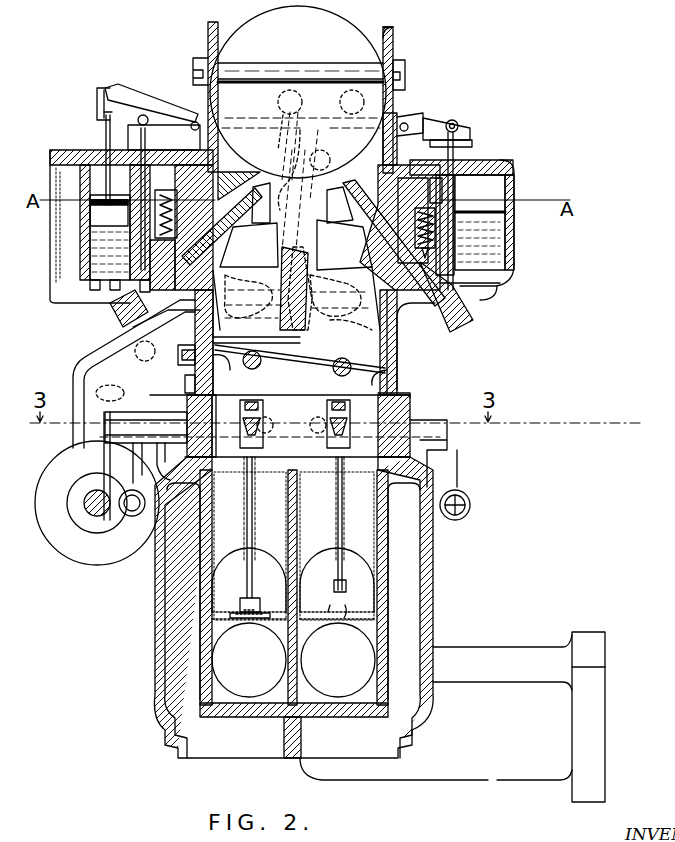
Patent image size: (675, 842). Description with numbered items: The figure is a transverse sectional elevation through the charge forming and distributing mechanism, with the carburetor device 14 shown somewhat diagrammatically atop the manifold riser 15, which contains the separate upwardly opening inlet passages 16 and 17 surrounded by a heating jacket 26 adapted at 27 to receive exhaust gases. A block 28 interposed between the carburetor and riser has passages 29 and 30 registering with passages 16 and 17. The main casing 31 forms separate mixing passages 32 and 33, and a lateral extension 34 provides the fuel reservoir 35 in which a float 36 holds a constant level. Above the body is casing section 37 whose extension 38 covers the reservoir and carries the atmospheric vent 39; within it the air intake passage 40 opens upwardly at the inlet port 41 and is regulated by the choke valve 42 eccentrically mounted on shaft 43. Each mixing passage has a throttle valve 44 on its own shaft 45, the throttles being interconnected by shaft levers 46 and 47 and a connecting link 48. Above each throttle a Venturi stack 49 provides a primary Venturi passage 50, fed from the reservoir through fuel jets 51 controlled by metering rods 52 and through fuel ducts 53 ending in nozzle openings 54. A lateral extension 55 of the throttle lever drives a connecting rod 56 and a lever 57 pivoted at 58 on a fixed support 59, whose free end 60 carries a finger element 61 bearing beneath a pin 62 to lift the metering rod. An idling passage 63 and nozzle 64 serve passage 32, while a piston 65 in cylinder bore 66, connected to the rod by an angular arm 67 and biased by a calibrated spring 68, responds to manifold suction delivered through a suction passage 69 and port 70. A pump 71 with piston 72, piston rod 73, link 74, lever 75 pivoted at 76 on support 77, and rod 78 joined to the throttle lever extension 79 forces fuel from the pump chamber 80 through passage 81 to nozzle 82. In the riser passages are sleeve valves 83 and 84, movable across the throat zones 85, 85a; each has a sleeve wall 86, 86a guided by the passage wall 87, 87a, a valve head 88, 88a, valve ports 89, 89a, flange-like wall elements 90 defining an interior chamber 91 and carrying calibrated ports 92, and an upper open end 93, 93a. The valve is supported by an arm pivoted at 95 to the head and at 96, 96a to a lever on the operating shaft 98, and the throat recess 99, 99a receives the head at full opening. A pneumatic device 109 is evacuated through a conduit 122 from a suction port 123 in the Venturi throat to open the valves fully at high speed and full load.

The charge forming or carburetor device 14 is at (499, 222).
The upward extension or riser 15 is at (198, 597).
The fuel inlet passage 16 is at (200, 516).
The fuel inlet passage 17 is at (388, 510).
The jacket 26 is at (438, 612).
The exhaust gas inlet 27 is at (405, 758).
The insert member or block 28 is at (412, 410).
The block passage 29 is at (190, 408).
The block passage 30 is at (400, 393).
The main casing or body member 31 is at (398, 335).
The mixing conduit or charge forming passage 32 is at (223, 426).
The mixing conduit or charge forming passage 33 is at (386, 385).
The lateral extension 34 is at (506, 280).
The fuel supply chamber or reservoir 35 is at (496, 204).
The float 36 is at (64, 235).
The casing section 37 is at (395, 50).
The lateral extension 38 is at (496, 160).
The reservoir atmospheric vent 39 is at (63, 150).
The air intake passage 40 is at (392, 34).
The air inlet port or opening 41 is at (370, 28).
The air control or choke valve 42 is at (256, 30).
The choke shaft 43 is at (278, 66).
The throttle valve 44 is at (210, 372).
The throttle shaft 45 is at (252, 369).
The shaft lever 46 is at (256, 332).
The shaft lever 47 is at (351, 330).
The connecting link 48 is at (253, 296).
The Venturi stack or multiple Venturi formation 49 is at (344, 245).
The primary Venturi passage 50 is at (326, 230).
The fuel jet 51 is at (110, 312).
The metering rod 52 is at (444, 190).
The fuel duct 53 is at (438, 308).
The nozzle opening 54 is at (345, 190).
The lateral extension 55 is at (300, 354).
The connecting rod 56 is at (309, 170).
The lever 57 is at (352, 102).
The pivot 58 is at (404, 122).
The fixed support 59 is at (408, 120).
The free end 60 is at (472, 134).
The finger element 61 is at (462, 128).
The pin 62 is at (460, 122).
The idling fuel passage 63 is at (195, 328).
The idling nozzle 64 is at (178, 360).
The piston 65 is at (442, 206).
The cylinder bore 66 is at (410, 220).
The angular arm 67 is at (445, 118).
The calibrated spring 68 is at (436, 236).
The suction passage 69 is at (339, 295).
The port 70 is at (185, 387).
The pump 71 is at (90, 258).
The pump piston 72 is at (109, 213).
The piston rod 73 is at (95, 158).
The link 74 is at (97, 106).
The lever 75 is at (150, 94).
The pivot 76 is at (170, 118).
The fixed support 77 is at (194, 120).
The rod 78 is at (290, 120).
The lateral extension 79 is at (175, 348).
The pump chamber 80 is at (52, 292).
The fuel passage 81 is at (236, 178).
The fuel nozzle 82 is at (243, 178).
The valve device 83 is at (214, 498).
The valve device 84 is at (298, 497).
The throat zone 85 is at (220, 678).
The throat zone 85a is at (312, 684).
The sleeve wall 86 is at (212, 525).
The sleeve wall 86a is at (330, 540).
The passage wall 87 is at (210, 550).
The passage wall 87a is at (386, 550).
The valve head 88 is at (240, 620).
The valve head 88a is at (342, 620).
The valve port 89 is at (240, 556).
The valve port 89a is at (328, 560).
The flange-like wall element 90 is at (353, 607).
The interior chamber 91 is at (346, 603).
The calibrated port 92 is at (330, 615).
The upper open end 93 is at (238, 508).
The upper open end 93a is at (326, 523).
The pivot 95 is at (252, 602).
The pivotal connection 96 is at (260, 424).
The pivotal connection 96a is at (340, 424).
The operating shaft 98 is at (120, 420).
The manifold throat recess 99 is at (228, 722).
The manifold throat recess 99a is at (316, 726).
The pneumatic or suction operated device 109 is at (60, 540).
The conduit 122 is at (73, 380).
The suction port 123 is at (249, 221).